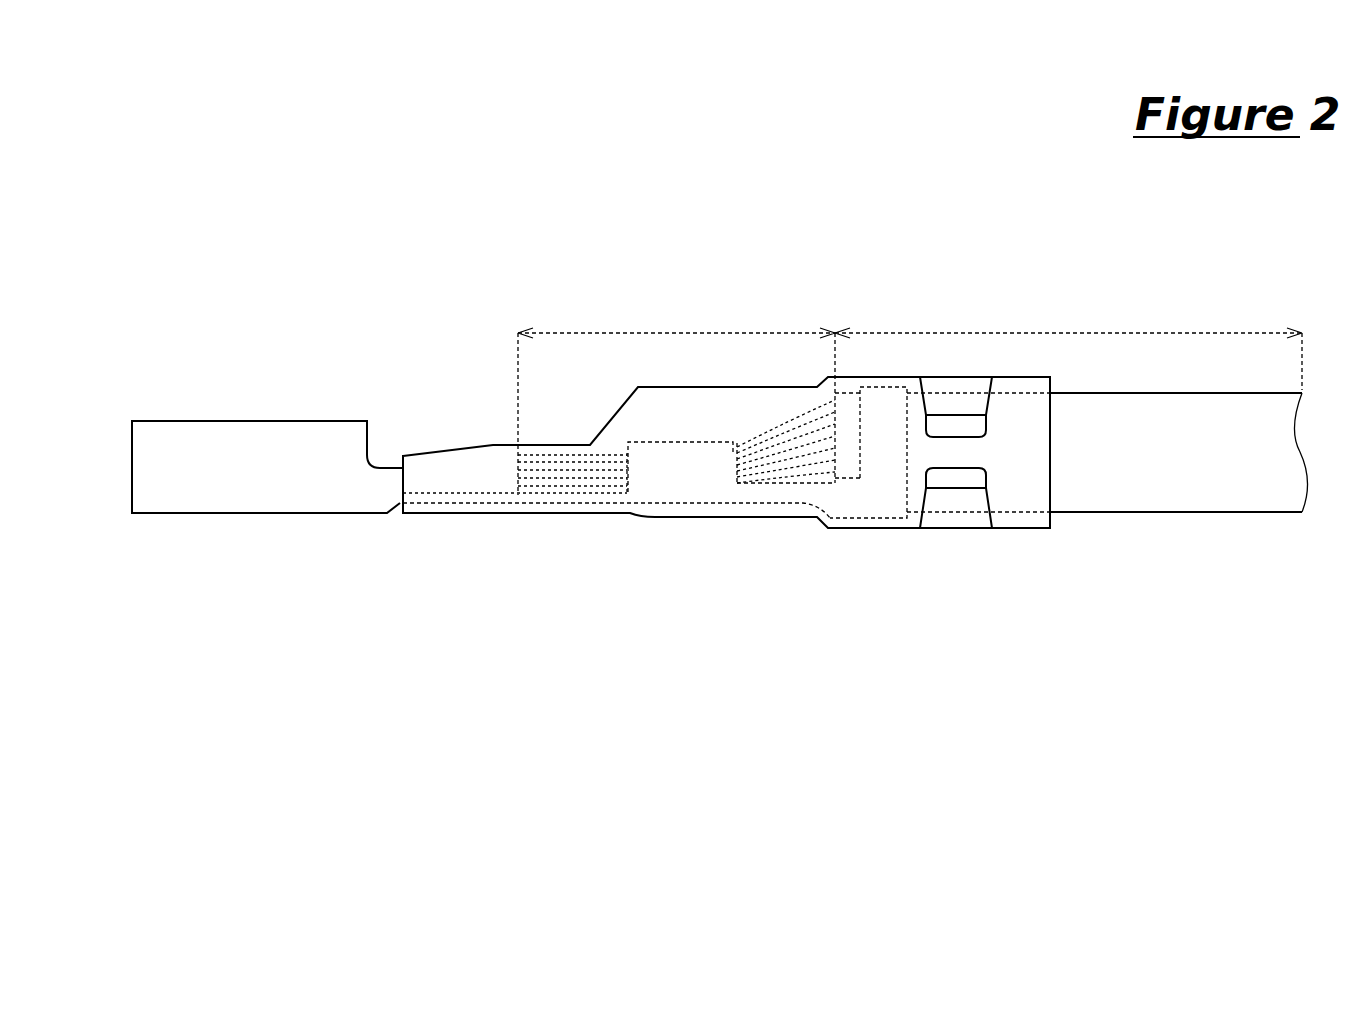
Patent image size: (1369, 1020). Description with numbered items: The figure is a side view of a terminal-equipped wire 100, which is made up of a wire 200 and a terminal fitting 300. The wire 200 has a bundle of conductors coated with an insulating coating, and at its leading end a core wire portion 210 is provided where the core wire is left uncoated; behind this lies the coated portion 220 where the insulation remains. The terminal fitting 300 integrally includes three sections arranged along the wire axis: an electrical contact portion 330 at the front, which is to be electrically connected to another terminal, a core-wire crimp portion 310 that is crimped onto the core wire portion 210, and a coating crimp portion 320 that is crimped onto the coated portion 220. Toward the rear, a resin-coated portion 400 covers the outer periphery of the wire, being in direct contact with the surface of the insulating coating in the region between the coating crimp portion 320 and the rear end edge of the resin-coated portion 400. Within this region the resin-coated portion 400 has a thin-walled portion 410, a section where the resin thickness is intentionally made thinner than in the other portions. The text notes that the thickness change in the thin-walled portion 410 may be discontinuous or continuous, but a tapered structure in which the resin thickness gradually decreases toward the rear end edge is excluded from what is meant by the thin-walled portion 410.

The terminal-equipped wire 100 is at (160, 127).
The wire 200 is at (923, 225).
The core wire portion 210 is at (685, 333).
The coated portion 220 is at (1063, 333).
The terminal fitting 300 is at (812, 620).
The core-wire crimp portion 310 is at (683, 485).
The coating crimp portion 320 is at (882, 485).
The electrical contact portion 330 is at (310, 493).
The resin-coated portion 400 is at (888, 548).
The thin-walled portion 410 is at (953, 482).